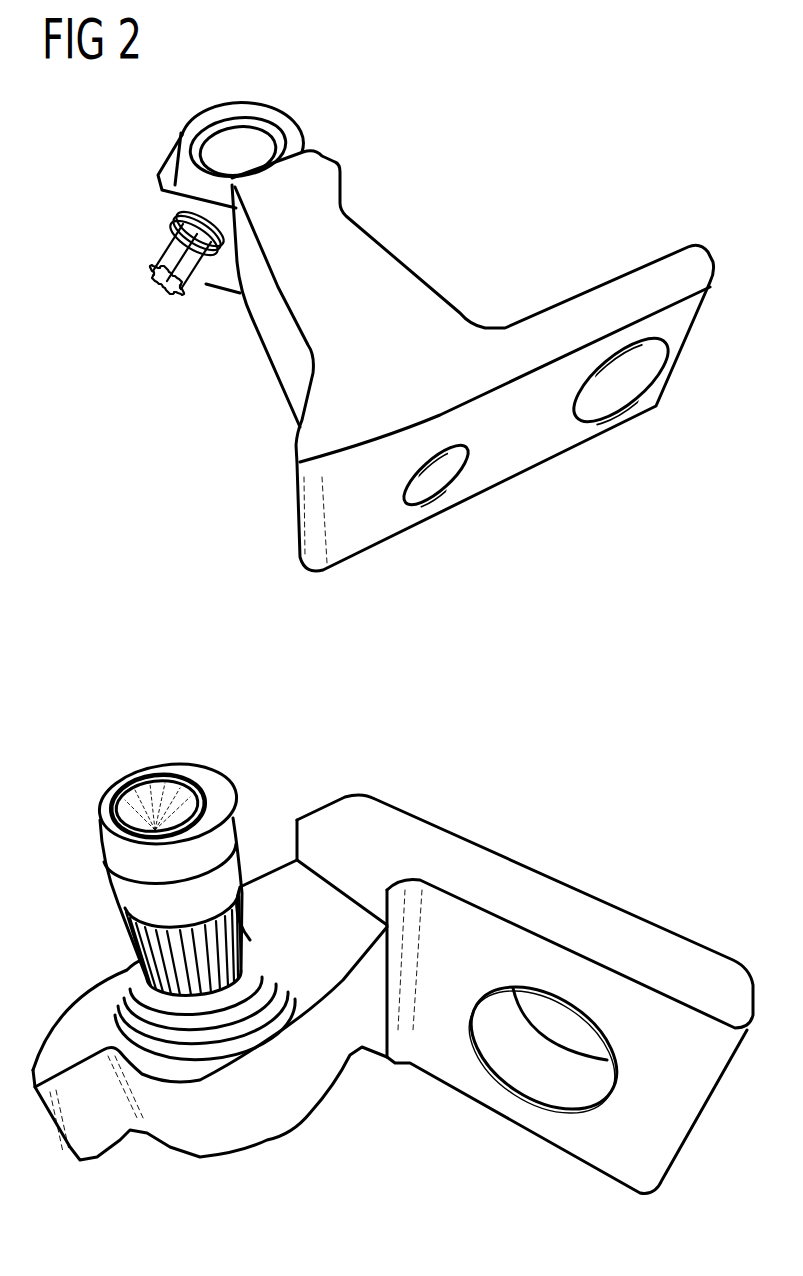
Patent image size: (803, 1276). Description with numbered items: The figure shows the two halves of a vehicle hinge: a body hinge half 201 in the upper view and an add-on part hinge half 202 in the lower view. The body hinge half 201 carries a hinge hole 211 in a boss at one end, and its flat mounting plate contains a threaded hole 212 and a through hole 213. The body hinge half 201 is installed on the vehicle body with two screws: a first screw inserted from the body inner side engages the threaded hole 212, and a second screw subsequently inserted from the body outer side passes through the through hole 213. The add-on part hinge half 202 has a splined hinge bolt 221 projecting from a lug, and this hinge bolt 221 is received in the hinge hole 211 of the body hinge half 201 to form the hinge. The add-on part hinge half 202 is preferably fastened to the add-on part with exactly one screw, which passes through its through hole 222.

The body hinge half 201 is at (320, 173).
The hinge hole 211 is at (239, 142).
The threaded hole 212 is at (437, 478).
The through hole 213 is at (620, 384).
The add-on part hinge half 202 is at (540, 896).
The hinge bolt 221 is at (160, 790).
The through hole 222 is at (543, 1063).